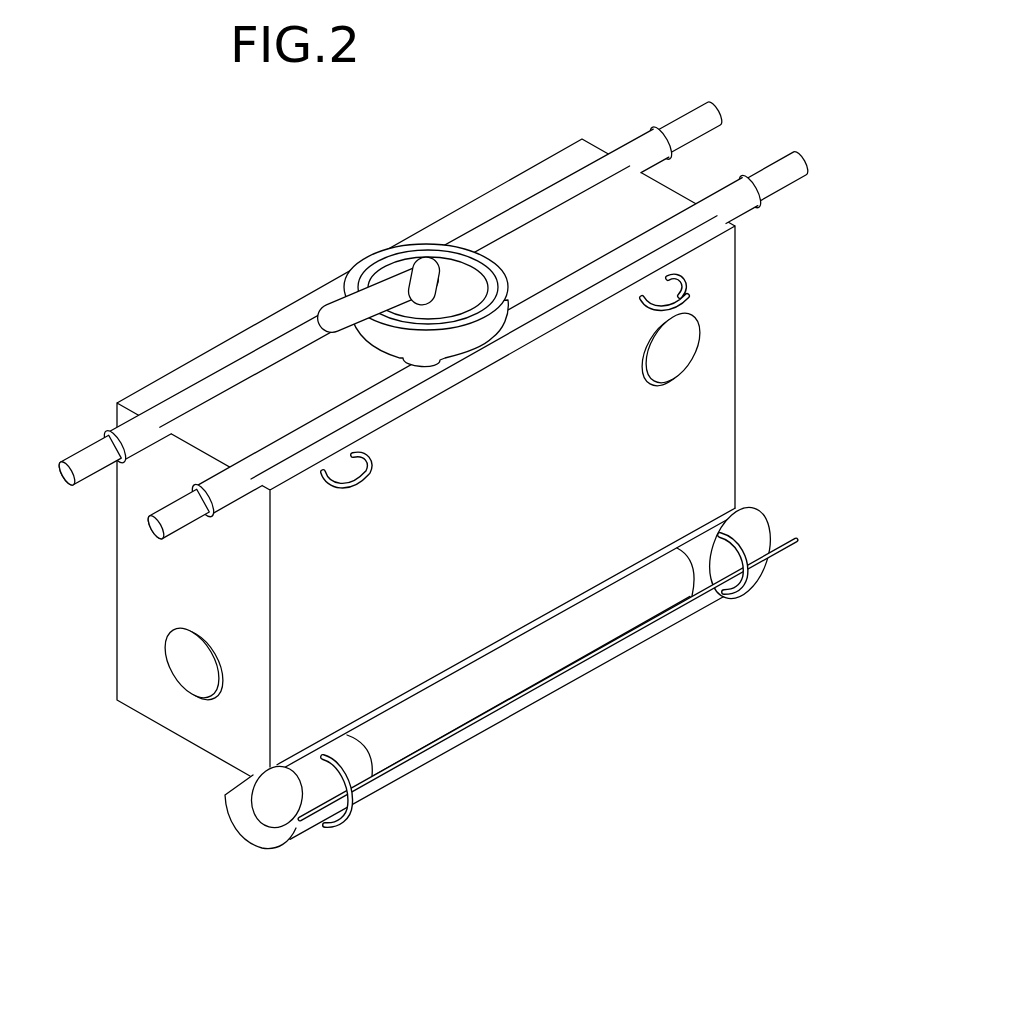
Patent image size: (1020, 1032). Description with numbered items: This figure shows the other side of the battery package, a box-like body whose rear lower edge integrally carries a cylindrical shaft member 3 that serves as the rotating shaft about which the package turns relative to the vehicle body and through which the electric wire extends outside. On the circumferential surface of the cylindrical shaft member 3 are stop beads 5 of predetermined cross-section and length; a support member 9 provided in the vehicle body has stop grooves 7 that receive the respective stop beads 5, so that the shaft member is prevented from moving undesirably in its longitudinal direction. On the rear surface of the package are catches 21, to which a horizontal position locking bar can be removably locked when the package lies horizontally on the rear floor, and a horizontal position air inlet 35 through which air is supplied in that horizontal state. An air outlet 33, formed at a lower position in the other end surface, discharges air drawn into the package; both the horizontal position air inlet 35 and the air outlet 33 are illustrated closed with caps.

The cylindrical shaft member 3 is at (738, 522).
The stop bead 5 is at (737, 520).
The stop groove 7 is at (770, 553).
The support member 9 is at (252, 818).
The catch 21 is at (338, 473).
The air outlet 33 is at (177, 664).
The horizontal position air inlet 35 is at (692, 347).